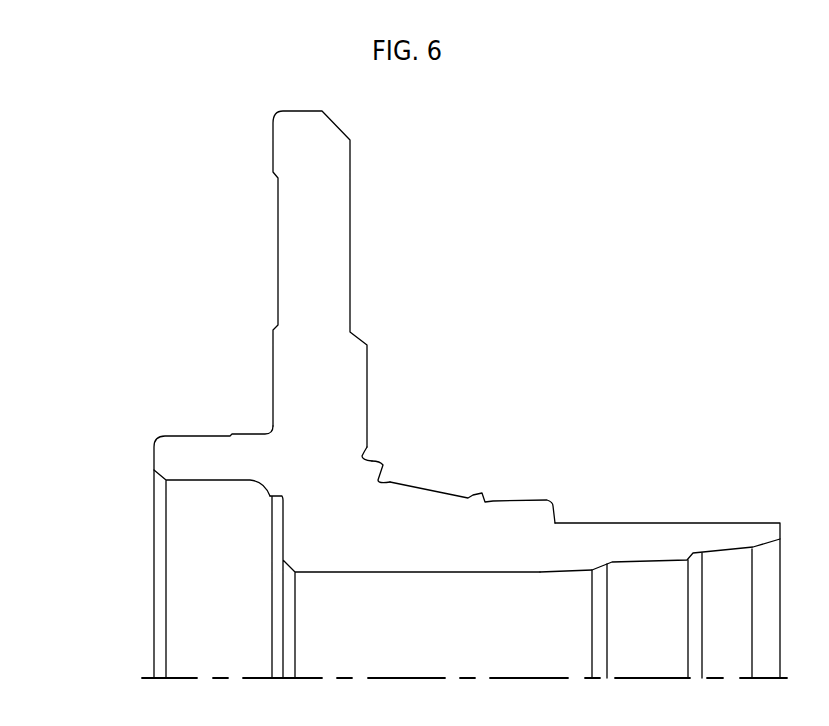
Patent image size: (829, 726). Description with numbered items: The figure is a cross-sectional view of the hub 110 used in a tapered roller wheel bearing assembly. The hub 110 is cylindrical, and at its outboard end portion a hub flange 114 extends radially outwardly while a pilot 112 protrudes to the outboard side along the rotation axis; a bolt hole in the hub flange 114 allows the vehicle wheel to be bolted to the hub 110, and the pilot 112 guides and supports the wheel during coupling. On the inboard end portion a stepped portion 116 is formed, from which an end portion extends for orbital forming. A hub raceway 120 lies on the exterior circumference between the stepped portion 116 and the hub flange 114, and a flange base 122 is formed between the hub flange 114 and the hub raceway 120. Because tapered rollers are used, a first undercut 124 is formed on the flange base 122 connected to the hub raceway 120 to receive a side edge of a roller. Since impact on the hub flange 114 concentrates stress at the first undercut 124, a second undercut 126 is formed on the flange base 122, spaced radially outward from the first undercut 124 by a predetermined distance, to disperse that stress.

The hub 110 is at (527, 306).
The pilot 112 is at (168, 458).
The hub flange 114 is at (298, 168).
The stepped portion 116 is at (630, 523).
The hub raceway 120 is at (428, 492).
The flange base 122 is at (360, 492).
The first undercut 124 is at (385, 482).
The second undercut 126 is at (365, 457).